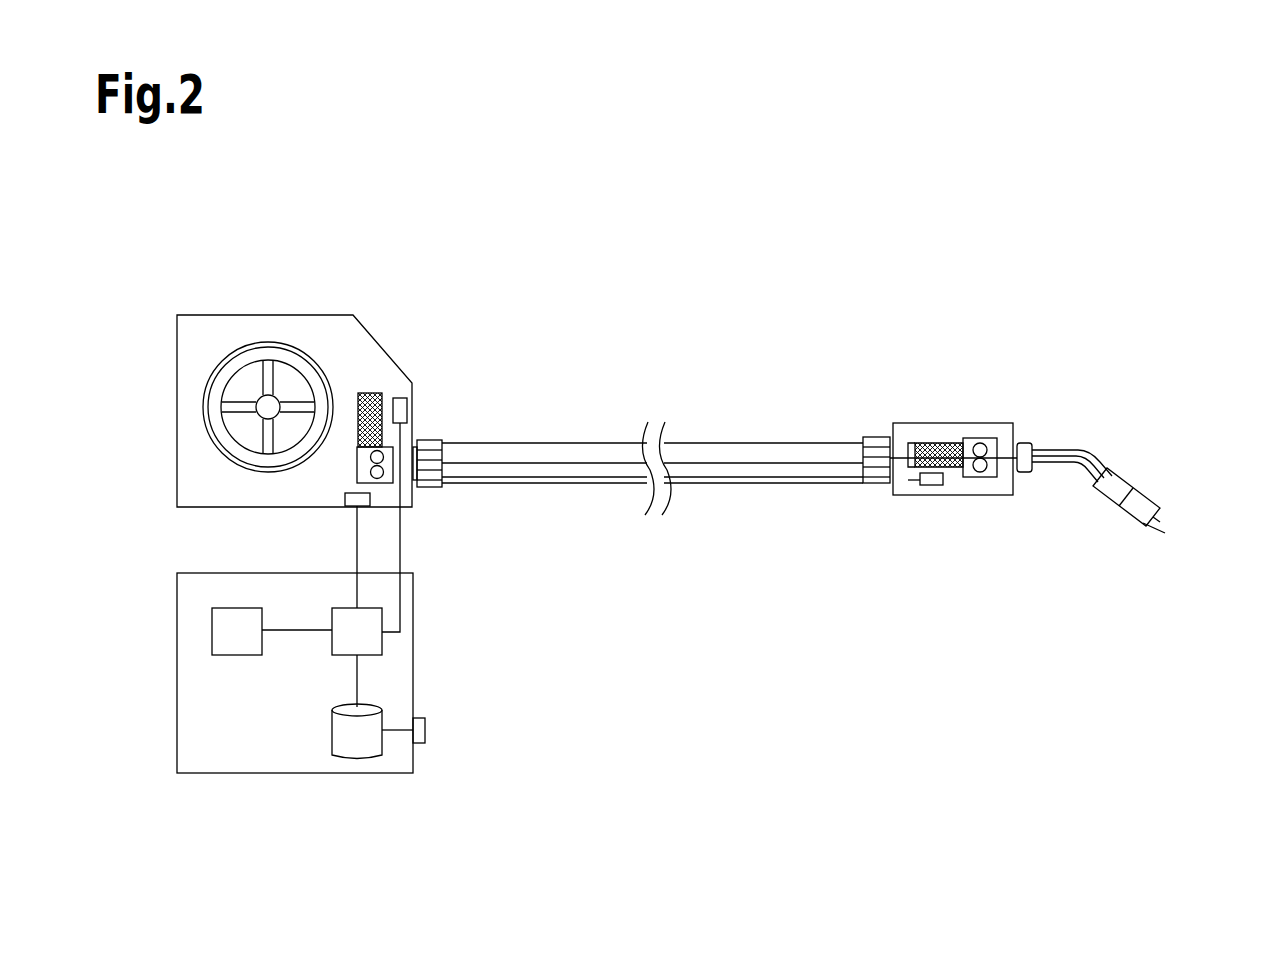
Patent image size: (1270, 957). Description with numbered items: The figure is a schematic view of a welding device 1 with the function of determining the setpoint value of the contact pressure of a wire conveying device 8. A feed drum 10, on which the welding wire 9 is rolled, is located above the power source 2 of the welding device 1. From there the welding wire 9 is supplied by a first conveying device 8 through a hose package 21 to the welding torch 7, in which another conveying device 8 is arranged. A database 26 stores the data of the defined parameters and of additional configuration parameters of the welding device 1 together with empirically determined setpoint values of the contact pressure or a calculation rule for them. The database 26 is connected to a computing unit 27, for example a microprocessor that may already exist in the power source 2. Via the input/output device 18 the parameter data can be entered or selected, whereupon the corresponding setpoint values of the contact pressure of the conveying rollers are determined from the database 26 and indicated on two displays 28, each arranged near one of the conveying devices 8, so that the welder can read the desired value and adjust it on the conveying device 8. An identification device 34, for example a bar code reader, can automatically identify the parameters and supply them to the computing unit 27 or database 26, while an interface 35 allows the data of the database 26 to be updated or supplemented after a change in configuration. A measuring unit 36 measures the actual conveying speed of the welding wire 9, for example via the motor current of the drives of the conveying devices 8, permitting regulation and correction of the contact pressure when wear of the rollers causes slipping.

The welding device 1 is at (185, 248).
The power source 2 is at (198, 725).
The welding torch 7 is at (1143, 468).
The conveying device 8 is at (367, 368).
The welding wire 9 is at (1148, 523).
The feed drum 10 is at (202, 350).
The input/output device 18 is at (232, 628).
The hose package 21 is at (617, 450).
The database 26 is at (352, 735).
The computing unit 27 is at (365, 635).
The display 28 is at (403, 397).
The identification device 34 is at (370, 507).
The interface 35 is at (588, 387).
The measuring unit 36 is at (395, 466).